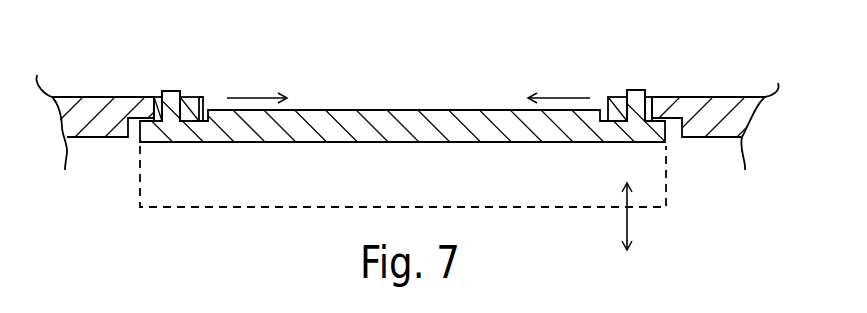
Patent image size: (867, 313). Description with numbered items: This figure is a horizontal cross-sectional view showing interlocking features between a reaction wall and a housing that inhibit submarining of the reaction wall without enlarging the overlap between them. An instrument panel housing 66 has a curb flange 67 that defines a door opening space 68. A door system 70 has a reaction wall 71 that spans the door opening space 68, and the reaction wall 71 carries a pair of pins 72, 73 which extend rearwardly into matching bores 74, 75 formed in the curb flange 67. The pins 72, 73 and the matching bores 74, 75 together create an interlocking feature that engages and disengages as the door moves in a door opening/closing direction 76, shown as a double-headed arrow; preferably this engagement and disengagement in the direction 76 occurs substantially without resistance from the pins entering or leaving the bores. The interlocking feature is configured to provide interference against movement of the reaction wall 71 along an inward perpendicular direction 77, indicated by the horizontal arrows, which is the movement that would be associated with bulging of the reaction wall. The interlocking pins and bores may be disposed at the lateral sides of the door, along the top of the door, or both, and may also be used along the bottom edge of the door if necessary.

The instrument panel housing 66 is at (723, 92).
The curb flange 67 is at (147, 108).
The door opening space 68 is at (203, 102).
The door system 70 is at (137, 181).
The reaction wall 71 is at (309, 145).
The pin 72 is at (173, 91).
The pin 73 is at (635, 90).
The bore 74 is at (190, 105).
The bore 75 is at (650, 97).
The door opening/closing direction 76 is at (627, 226).
The inward perpendicular direction 77 is at (265, 96).